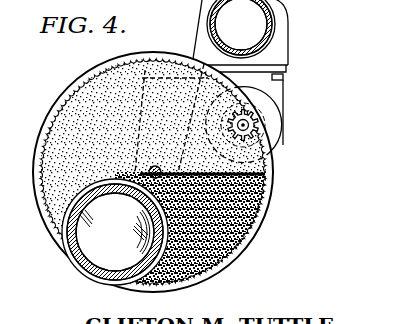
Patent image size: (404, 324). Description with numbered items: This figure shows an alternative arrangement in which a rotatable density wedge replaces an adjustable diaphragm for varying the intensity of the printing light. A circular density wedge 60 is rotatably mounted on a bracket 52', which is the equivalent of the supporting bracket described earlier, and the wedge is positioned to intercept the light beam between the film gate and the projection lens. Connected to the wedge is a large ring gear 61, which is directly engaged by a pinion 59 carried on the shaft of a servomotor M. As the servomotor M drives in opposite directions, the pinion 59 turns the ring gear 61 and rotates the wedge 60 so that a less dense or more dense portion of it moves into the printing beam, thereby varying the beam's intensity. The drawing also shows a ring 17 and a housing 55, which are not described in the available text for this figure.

The lens ring 17 is at (90, 244).
The bracket 52' is at (171, 97).
The tubular housing 55 is at (280, 25).
The pinion 59 is at (256, 134).
The circular density wedge 60 is at (72, 100).
The ring gear 61 is at (93, 74).
The servomotor M is at (274, 140).